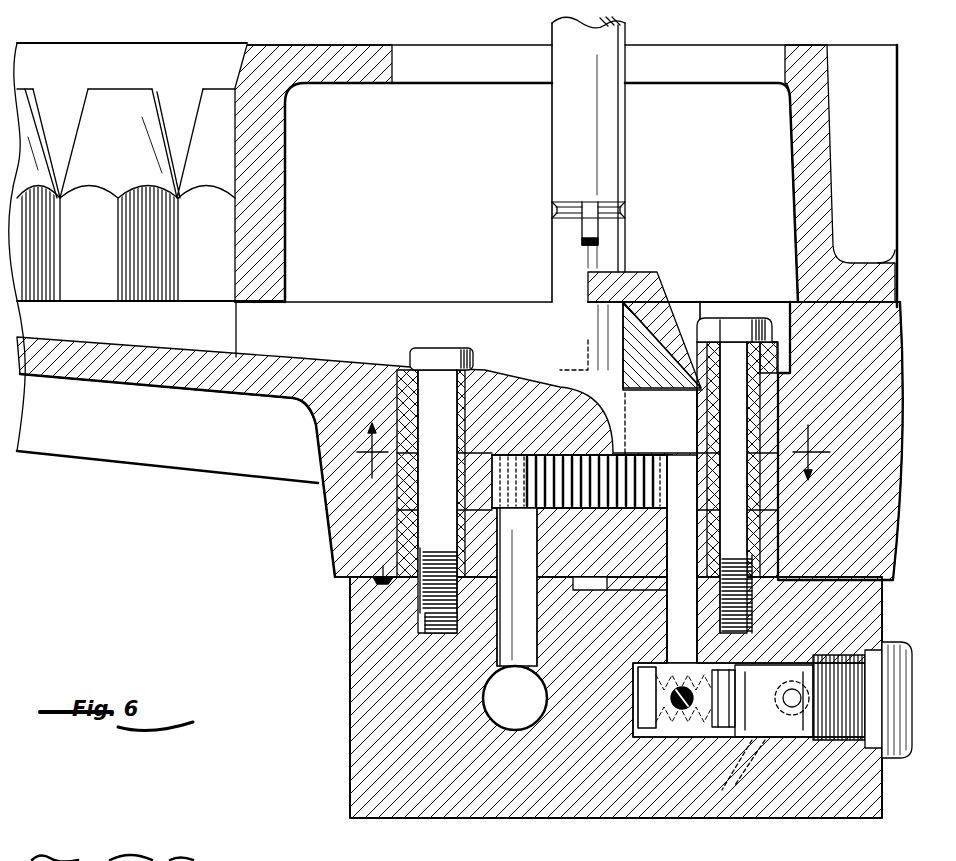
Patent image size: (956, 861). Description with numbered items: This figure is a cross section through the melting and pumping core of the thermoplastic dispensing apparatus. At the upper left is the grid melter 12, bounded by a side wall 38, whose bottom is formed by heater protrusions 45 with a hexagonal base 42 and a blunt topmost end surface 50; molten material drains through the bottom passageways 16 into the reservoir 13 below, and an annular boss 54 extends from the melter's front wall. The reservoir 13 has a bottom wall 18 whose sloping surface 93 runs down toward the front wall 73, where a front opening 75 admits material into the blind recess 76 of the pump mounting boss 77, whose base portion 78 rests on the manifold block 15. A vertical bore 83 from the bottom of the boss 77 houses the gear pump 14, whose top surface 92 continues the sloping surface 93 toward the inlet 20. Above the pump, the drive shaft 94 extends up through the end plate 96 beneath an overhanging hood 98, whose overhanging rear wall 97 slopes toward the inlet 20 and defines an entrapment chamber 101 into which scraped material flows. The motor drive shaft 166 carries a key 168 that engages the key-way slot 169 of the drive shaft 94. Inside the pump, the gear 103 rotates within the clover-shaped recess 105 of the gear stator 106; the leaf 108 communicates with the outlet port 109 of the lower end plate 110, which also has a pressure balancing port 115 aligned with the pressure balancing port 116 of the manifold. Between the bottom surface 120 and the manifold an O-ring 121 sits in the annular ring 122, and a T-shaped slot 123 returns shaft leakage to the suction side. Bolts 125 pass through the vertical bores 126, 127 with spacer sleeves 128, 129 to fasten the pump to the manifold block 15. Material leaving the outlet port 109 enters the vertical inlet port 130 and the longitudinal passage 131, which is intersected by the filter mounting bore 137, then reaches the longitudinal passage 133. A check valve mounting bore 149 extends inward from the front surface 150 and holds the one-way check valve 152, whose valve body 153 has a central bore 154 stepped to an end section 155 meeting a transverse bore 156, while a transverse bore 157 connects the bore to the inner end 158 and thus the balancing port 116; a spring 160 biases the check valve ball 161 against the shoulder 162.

The grid melter 12 is at (176, 73).
The reservoir 13 is at (145, 407).
The gear pump 14 is at (802, 415).
The manifold block 15 is at (597, 812).
The bottom passageways 16 is at (105, 300).
The bottom wall 18 is at (63, 366).
The inlet 20 is at (661, 423).
The side wall 38 is at (268, 214).
The base 42 is at (190, 298).
The protrusion 45 is at (113, 124).
The topmost end surface 50 is at (135, 64).
The annular boss 54 is at (830, 46).
The front wall 73 is at (222, 300).
The front opening 75 is at (274, 329).
The blind recess 76 is at (787, 302).
The pump mounting boss 77 is at (880, 272).
The base portion 78 is at (321, 552).
The vertical bore 83 is at (768, 527).
The top surface 92 is at (513, 363).
The sloping surface 93 is at (343, 358).
The drive shaft 94 is at (626, 238).
The end plate 96 is at (397, 433).
The overhanging rear wall 97 is at (692, 290).
The overhanging hood 98 is at (657, 273).
The entrapment chamber 101 is at (690, 302).
The gear 103 is at (582, 495).
The clover-shaped recess 105 is at (681, 490).
The gear stator 106 is at (396, 457).
The leaf 108 is at (515, 500).
The outlet port 109 is at (522, 563).
The lower end plate 110 is at (352, 580).
The pressure balancing port 115 is at (680, 545).
The pressure balancing port 116 is at (686, 624).
The bottom surface 120 is at (633, 575).
The O-ring 121 is at (385, 586).
The annular ring 122 is at (350, 600).
The T-shaped slot 123 is at (583, 670).
The bolts 125 is at (440, 372).
The vertical bore 126 is at (400, 383).
The vertical bore 127 is at (757, 403).
The spacer sleeve 128 is at (460, 605).
The spacer sleeve 129 is at (760, 553).
The vertical inlet port 130 is at (540, 652).
The longitudinal passage 131 is at (521, 698).
The longitudinal passage 133 is at (772, 660).
The filter mounting bore 137 is at (146, 842).
The check valve mounting bore 149 is at (772, 740).
The front surface 150 is at (882, 642).
The one-way check valve 152 is at (630, 699).
The valve body 153 is at (744, 663).
The central bore 154 is at (720, 745).
The end section 155 is at (812, 665).
The transverse bore 156 is at (800, 690).
The transverse bore 157 is at (680, 710).
The inner end 158 is at (655, 738).
The spring 160 is at (680, 672).
The check valve ball 161 is at (748, 762).
The shoulder 162 is at (748, 776).
The drive shaft 166 is at (628, 140).
The key 168 is at (590, 205).
The key-way slot 169 is at (578, 252).